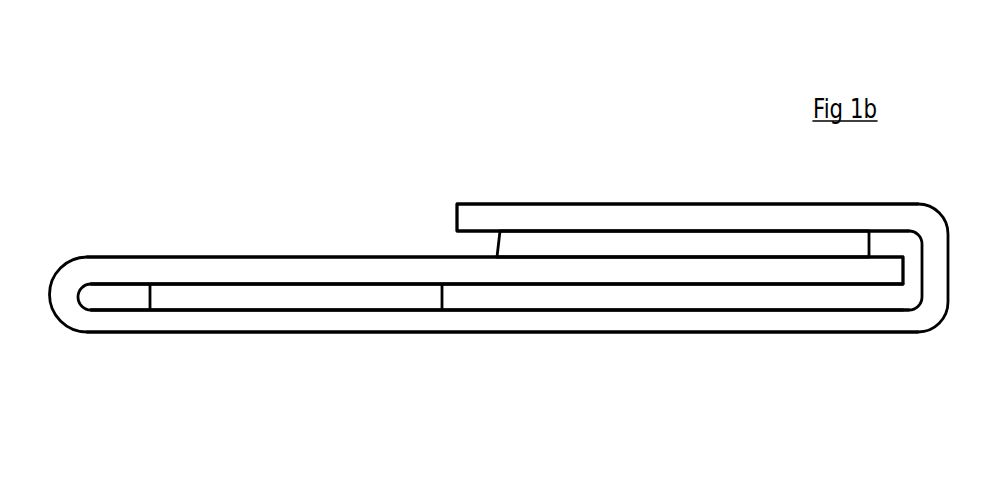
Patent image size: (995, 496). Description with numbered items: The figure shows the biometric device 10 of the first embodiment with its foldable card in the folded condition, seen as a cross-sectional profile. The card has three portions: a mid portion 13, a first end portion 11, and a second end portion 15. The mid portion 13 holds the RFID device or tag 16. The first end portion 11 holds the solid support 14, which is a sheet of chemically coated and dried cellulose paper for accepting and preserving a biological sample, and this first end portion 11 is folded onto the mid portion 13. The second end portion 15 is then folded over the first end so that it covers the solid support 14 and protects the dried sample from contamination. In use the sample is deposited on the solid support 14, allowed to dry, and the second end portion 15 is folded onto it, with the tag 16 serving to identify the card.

The biometric device 10 is at (352, 107).
The first end portion 11 is at (202, 268).
The mid portion 13 is at (577, 321).
The solid support 14 is at (628, 248).
The second end portion 15 is at (746, 218).
The RFID device or tag 16 is at (257, 293).